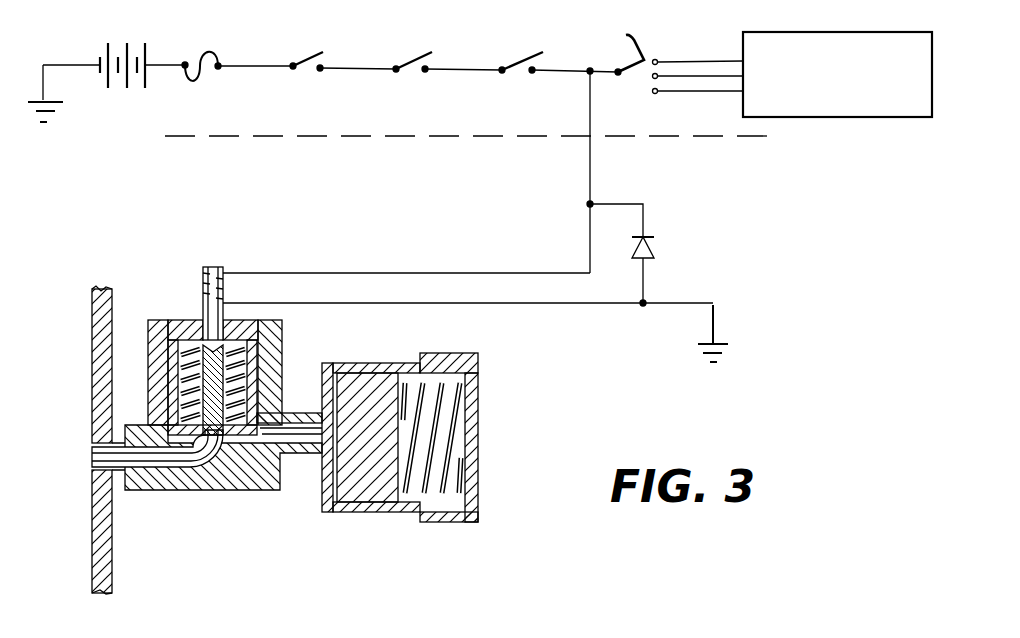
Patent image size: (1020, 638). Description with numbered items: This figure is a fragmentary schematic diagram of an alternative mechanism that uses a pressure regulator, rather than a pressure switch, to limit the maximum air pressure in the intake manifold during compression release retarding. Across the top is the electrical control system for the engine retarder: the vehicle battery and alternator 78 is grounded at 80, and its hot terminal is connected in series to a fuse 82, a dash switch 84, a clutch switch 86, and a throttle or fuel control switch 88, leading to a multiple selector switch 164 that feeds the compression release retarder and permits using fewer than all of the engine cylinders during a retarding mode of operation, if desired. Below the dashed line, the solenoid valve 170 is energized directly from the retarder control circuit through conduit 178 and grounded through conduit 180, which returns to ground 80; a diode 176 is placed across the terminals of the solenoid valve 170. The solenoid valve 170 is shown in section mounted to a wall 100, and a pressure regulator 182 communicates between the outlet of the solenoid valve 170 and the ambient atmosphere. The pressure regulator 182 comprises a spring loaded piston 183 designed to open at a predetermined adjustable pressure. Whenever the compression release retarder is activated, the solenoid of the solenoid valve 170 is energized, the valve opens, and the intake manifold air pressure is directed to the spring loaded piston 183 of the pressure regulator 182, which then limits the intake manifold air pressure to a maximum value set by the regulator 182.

The vehicle battery and alternator 78 is at (135, 45).
The ground 80 is at (48, 113).
The fuse 82 is at (207, 52).
The dash switch 84 is at (309, 56).
The clutch switch 86 is at (418, 56).
The throttle or fuel control switch 88 is at (526, 56).
The multiple selector switch 164 is at (644, 36).
The diode 176 is at (657, 248).
The conduit 178 is at (428, 272).
The conduit 180 is at (695, 304).
The wall 100 is at (112, 298).
The solenoid valve 170 is at (292, 348).
The pressure regulator 182 is at (400, 453).
The spring loaded piston 183 is at (369, 366).